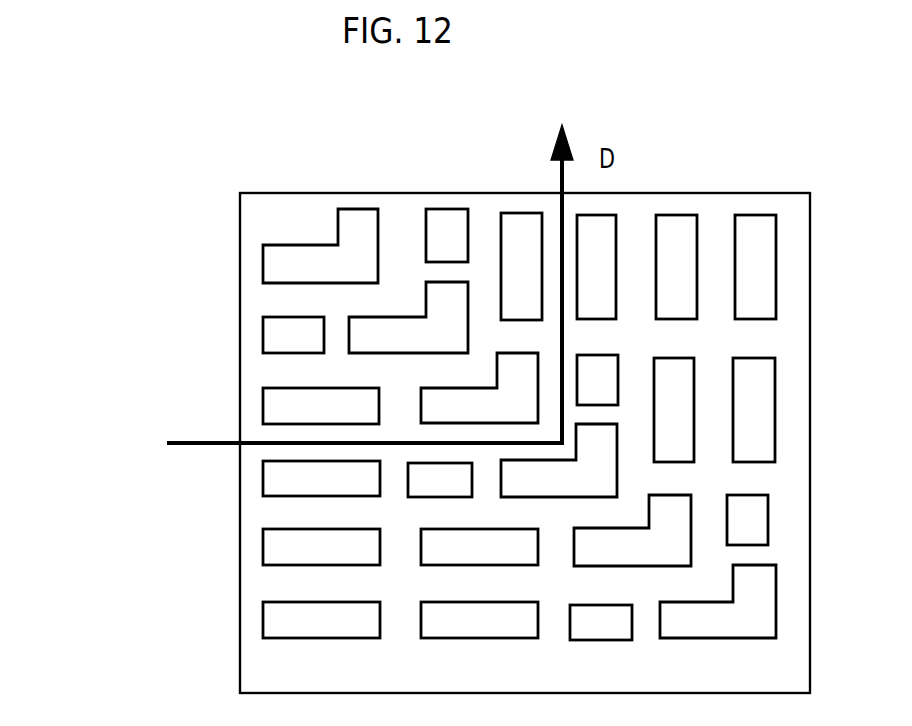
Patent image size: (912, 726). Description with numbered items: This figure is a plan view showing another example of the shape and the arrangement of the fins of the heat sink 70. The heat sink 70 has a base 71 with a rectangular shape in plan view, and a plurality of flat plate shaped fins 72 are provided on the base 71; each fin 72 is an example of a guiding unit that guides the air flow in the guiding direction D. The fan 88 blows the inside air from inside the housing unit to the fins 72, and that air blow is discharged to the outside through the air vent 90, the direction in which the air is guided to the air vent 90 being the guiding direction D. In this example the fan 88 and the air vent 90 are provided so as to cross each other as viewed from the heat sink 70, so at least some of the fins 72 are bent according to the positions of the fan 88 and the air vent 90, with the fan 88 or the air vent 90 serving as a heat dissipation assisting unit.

The heat sink 70 is at (752, 157).
The base 71 is at (243, 212).
The fin 72 is at (283, 265).
The fan 88 is at (305, 311).
The air vent 90 is at (553, 123).